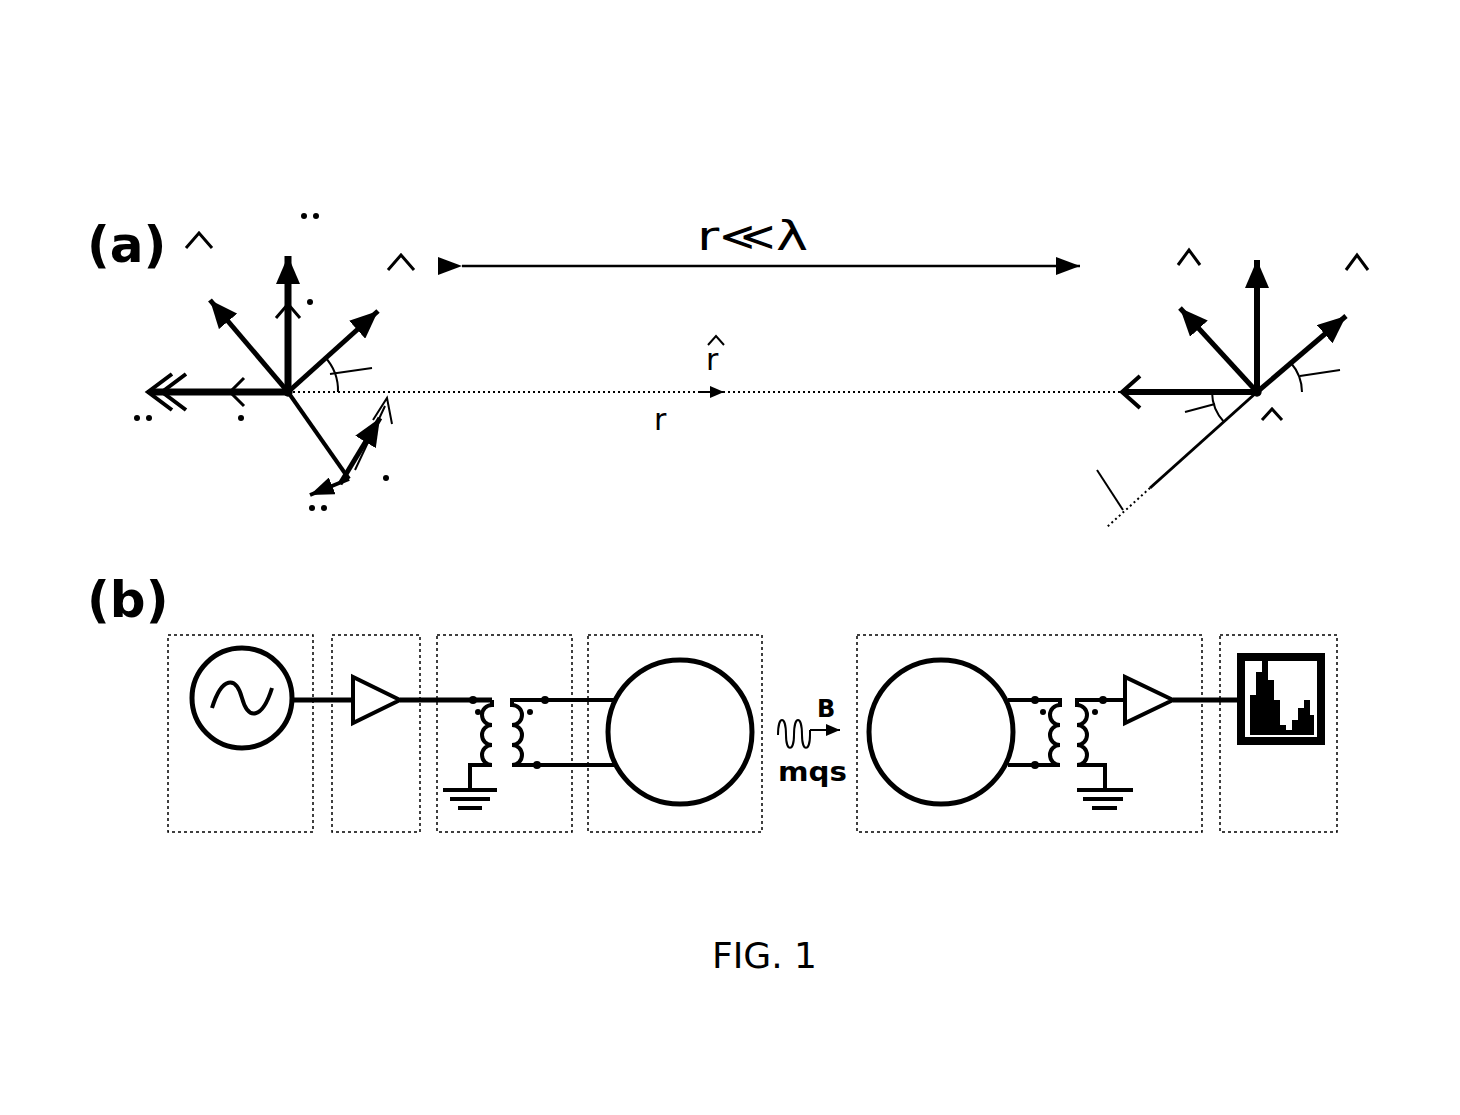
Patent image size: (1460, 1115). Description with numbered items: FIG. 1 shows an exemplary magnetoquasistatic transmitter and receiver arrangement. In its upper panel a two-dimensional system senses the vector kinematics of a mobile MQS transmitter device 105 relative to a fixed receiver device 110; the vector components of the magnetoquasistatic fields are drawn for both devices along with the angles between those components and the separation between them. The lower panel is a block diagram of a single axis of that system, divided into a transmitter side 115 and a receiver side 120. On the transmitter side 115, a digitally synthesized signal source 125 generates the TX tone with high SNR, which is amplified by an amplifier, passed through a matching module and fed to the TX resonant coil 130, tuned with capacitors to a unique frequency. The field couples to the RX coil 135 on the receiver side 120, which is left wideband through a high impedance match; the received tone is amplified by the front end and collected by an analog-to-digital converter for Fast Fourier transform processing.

The mobile MQS transmitter device 105 is at (494, 215).
The fixed receiver device 110 is at (1106, 249).
The transmitter side 115 is at (371, 905).
The receiver side 120 is at (1124, 906).
The digitally synthesized signal source 125 is at (226, 842).
The TX resonant coil 130 is at (726, 581).
The RX coil 135 is at (902, 591).